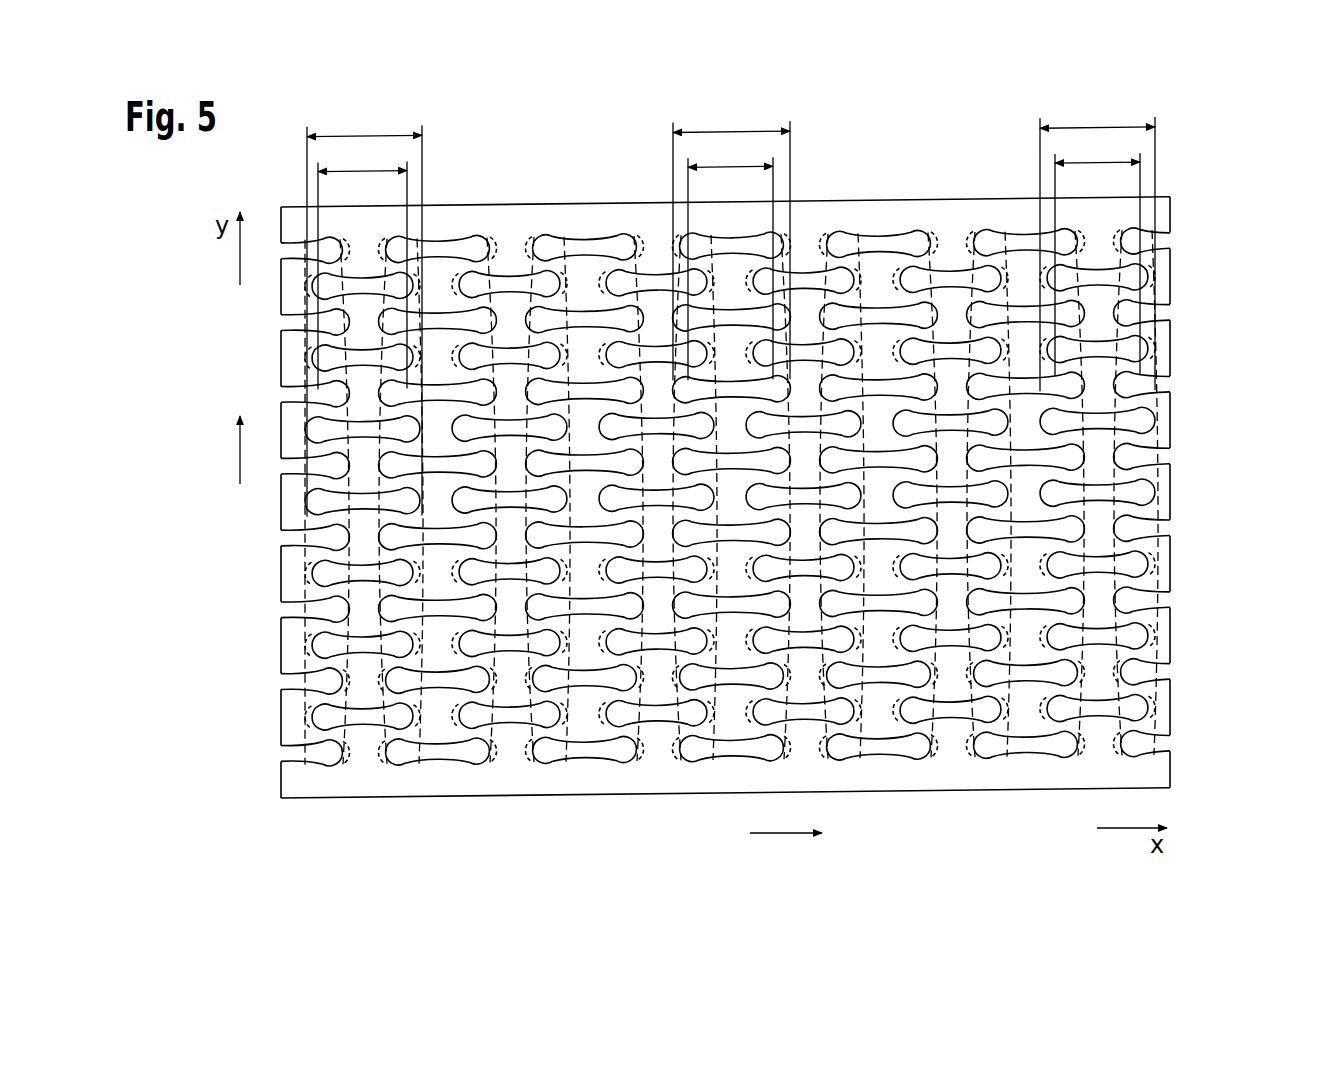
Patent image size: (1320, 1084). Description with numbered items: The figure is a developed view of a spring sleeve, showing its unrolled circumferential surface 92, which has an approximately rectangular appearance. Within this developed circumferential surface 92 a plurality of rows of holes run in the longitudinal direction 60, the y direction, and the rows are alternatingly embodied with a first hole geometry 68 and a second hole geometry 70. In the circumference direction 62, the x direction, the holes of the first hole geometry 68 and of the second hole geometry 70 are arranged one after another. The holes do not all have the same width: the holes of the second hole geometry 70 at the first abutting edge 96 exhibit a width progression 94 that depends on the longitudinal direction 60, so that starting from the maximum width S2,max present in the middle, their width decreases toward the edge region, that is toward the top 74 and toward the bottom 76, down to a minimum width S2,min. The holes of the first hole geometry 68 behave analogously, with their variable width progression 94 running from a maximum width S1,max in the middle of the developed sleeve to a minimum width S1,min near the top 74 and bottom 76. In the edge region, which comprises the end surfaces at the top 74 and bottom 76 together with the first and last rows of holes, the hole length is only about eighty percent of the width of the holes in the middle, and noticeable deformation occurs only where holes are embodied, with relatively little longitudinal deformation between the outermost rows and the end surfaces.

The longitudinal direction 60 is at (239, 454).
The circumference direction 62 is at (777, 833).
The first hole geometry 68 is at (706, 300).
The second hole geometry 70 is at (407, 493).
The top 74 is at (542, 203).
The bottom 76 is at (548, 796).
The developed circumferential surface 92 is at (765, 504).
The width progression 94 is at (425, 168).
The first abutting edge 96 is at (1172, 505).